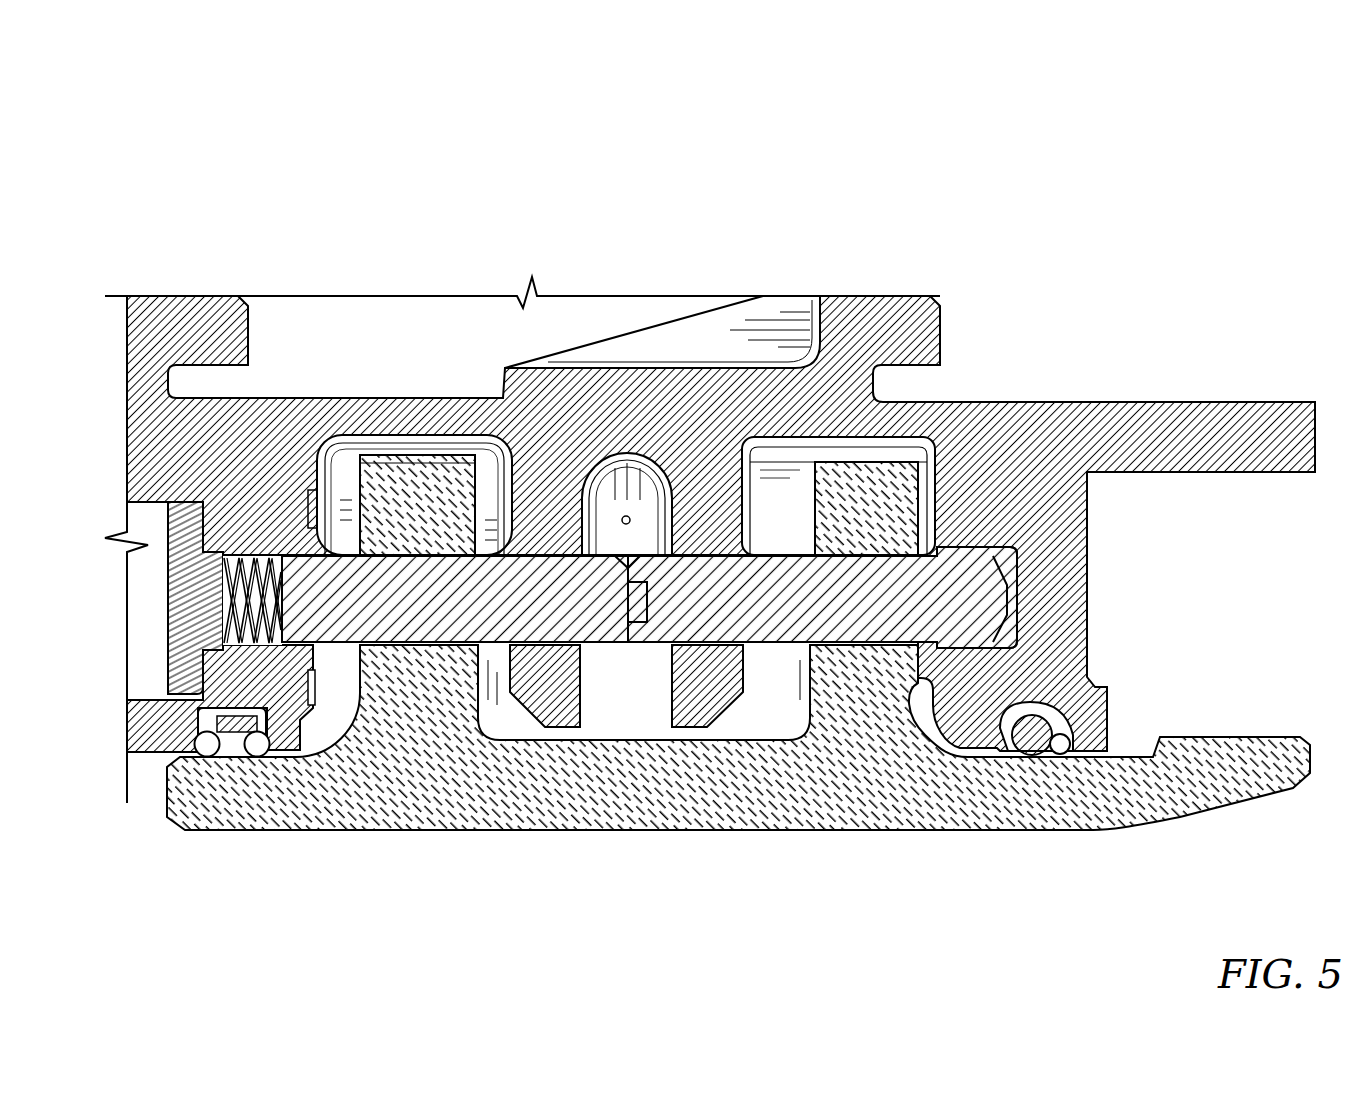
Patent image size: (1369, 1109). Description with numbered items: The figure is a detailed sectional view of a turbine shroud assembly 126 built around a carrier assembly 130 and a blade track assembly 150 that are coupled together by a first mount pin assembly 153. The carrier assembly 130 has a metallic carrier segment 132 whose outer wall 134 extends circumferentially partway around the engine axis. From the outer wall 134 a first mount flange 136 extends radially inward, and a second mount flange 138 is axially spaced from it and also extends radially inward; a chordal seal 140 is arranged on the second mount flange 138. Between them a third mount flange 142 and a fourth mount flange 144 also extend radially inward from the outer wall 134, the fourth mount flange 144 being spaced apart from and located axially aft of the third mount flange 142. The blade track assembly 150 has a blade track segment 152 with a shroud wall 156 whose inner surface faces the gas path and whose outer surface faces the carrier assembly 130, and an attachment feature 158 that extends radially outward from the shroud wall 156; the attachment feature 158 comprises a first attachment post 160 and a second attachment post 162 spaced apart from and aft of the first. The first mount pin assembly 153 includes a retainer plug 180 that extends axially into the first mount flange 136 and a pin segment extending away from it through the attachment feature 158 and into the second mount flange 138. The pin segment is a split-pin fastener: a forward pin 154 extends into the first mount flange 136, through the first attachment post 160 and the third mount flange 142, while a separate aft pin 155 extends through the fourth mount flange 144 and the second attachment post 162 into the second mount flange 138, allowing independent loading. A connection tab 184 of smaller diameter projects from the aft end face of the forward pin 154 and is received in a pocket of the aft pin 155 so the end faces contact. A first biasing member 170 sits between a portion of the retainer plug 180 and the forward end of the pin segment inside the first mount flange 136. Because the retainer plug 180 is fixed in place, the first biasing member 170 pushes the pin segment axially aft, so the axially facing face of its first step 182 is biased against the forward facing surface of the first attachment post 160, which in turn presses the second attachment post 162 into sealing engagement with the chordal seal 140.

The turbine shroud assembly 126 is at (207, 187).
The carrier assembly 130 is at (1218, 380).
The carrier segment 132 is at (510, 365).
The outer wall 134 is at (180, 418).
The first mount flange 136 is at (247, 473).
The second mount flange 138 is at (1070, 560).
The chordal seal 140 is at (915, 688).
The third mount flange 142 is at (540, 830).
The fourth mount flange 144 is at (707, 697).
The blade track assembly 150 is at (178, 826).
The blade track segment 152 is at (653, 835).
The first mount pin assembly 153 is at (985, 612).
The forward pin 154 is at (428, 613).
The aft pin 155 is at (864, 613).
The shroud wall 156 is at (490, 830).
The attachment feature 158 is at (373, 735).
The first attachment post 160 is at (870, 505).
The second attachment post 162 is at (420, 475).
The first biasing member 170 is at (258, 548).
The retainer plug 180 is at (178, 573).
The first step 182 is at (343, 657).
The connection tab 184 is at (648, 598).